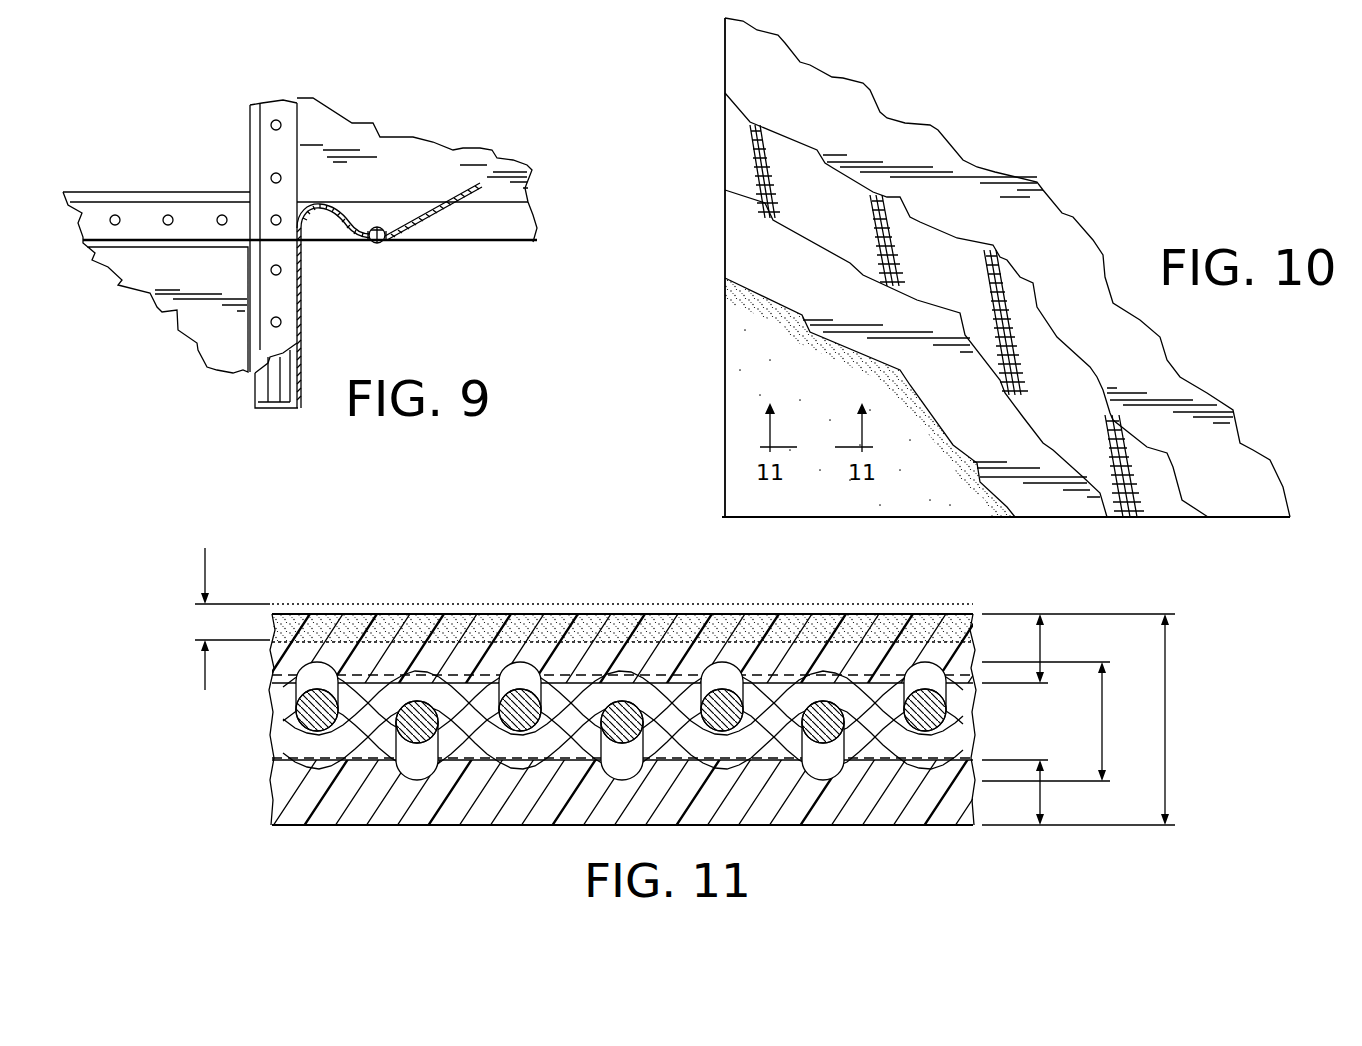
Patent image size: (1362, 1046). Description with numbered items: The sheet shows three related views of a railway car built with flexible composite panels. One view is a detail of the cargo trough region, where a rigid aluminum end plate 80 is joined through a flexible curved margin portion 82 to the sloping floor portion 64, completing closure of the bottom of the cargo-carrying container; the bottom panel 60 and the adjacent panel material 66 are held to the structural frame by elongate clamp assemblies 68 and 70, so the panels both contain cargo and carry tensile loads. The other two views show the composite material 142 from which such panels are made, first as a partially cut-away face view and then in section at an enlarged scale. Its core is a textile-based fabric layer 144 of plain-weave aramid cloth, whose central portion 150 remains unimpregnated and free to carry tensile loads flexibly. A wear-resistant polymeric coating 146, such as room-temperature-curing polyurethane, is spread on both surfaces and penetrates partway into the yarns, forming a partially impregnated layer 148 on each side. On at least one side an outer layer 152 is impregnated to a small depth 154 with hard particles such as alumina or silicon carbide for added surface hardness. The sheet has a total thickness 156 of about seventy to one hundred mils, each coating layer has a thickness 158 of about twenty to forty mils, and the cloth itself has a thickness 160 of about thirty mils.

In FIG. 9, the bottom panel 60 is at (212, 306).
In FIG. 9, the sloping floor portion 64 is at (445, 195).
In FIG. 9, the insulation panel 66 is at (412, 162).
In FIG. 9, the elongate clamp assembly 68 is at (282, 145).
In FIG. 9, the elongate clamp assembly 70 is at (141, 220).
In FIG. 9, the aluminum end plate 80 is at (300, 277).
In FIG. 9, the flexible curved margin portion 82 is at (322, 203).
In FIG. 10, the composite material 142 is at (724, 318).
In FIG. 11, the composite material 142 is at (270, 799).
In FIG. 10, the textile-based fabric layer 144 is at (1170, 507).
In FIG. 11, the textile-based fabric layer 144 is at (626, 720).
In FIG. 10, the coating 146 is at (1066, 505).
In FIG. 11, the coating 146 is at (362, 652).
In FIG. 11, the partially impregnated layer 148 is at (812, 660).
In FIG. 11, the central portion of the cloth 150 is at (960, 718).
In FIG. 10, the outer layer 152 is at (908, 488).
In FIG. 11, the outer layer 152 is at (273, 627).
In FIG. 11, the depth 154 is at (203, 568).
In FIG. 11, the total thickness 156 is at (1165, 727).
In FIG. 11, the thickness of coating layer 158 is at (1043, 648).
In FIG. 11, the thickness of textile cloth 160 is at (1103, 705).